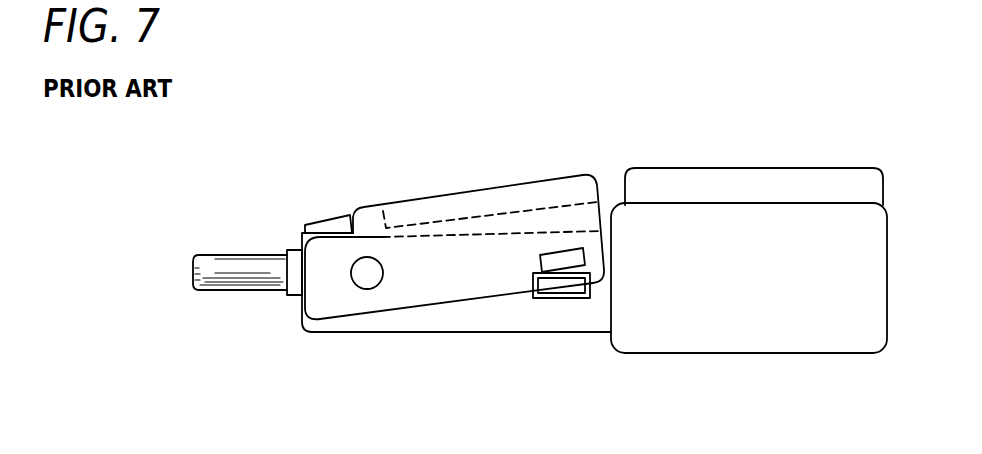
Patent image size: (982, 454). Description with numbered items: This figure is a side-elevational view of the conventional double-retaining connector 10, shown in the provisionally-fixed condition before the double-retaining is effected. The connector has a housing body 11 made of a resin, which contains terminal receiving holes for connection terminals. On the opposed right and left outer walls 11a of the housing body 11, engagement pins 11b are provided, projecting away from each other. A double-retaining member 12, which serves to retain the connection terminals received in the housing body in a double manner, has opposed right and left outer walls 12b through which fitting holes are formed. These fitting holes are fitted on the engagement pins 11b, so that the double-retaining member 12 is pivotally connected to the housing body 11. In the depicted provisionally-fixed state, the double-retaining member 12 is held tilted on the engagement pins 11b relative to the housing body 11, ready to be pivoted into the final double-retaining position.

The double-retaining connector 10 is at (796, 158).
The housing body 11 is at (747, 327).
The outer walls 11a is at (467, 317).
The engagement pins 11b is at (365, 272).
The double-retaining member 12 is at (397, 203).
The outer walls 12b is at (447, 263).